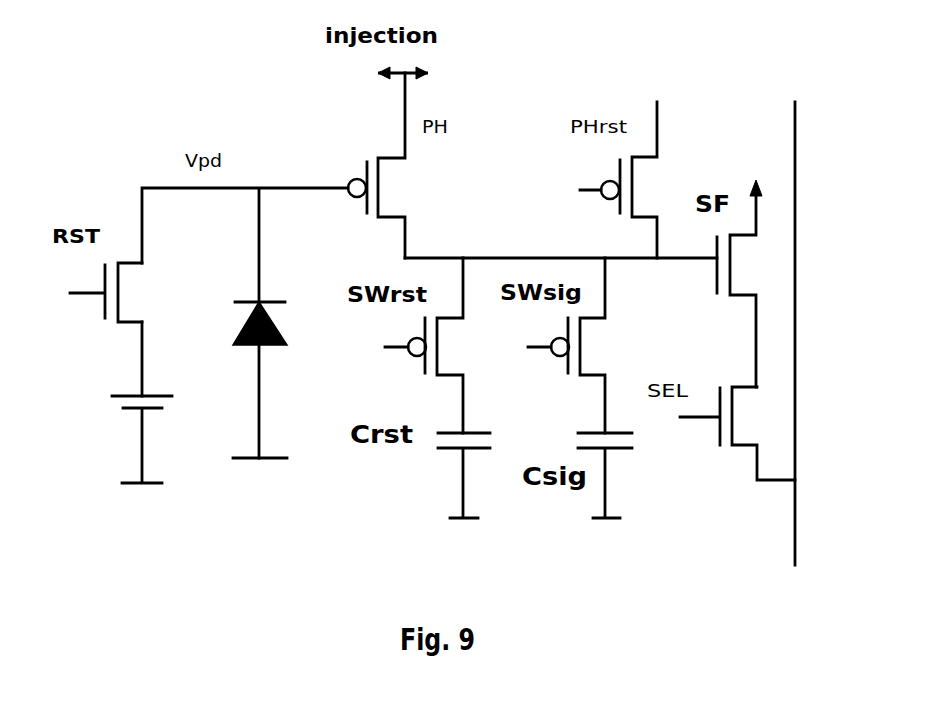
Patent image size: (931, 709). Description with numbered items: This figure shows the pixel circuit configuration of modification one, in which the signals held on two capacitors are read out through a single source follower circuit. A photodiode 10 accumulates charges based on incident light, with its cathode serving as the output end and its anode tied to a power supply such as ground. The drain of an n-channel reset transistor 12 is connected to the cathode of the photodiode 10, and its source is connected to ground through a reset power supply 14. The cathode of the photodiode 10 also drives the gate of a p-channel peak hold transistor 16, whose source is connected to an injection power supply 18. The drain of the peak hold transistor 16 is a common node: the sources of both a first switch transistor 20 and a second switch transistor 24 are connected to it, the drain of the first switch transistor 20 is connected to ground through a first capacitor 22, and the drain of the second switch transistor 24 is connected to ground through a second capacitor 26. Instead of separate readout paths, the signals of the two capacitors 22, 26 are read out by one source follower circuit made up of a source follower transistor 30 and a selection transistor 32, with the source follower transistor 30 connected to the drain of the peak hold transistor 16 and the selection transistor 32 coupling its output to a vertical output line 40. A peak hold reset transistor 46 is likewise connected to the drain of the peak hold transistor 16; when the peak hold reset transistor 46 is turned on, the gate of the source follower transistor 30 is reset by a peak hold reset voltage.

The photodiode 10 is at (240, 315).
The reset transistor 12 is at (92, 315).
The reset power supply 14 is at (105, 400).
The peak hold transistor 16 is at (353, 162).
The injection power supply 18 is at (435, 71).
The first switch transistor 20 is at (405, 355).
The first capacitor 22 is at (442, 457).
The second switch transistor 24 is at (595, 343).
The second capacitor 26 is at (637, 452).
The source follower transistor 30 is at (757, 260).
The selection transistor 32 is at (748, 415).
The output signal line 40 is at (795, 230).
The peak hold reset transistor 46 is at (650, 180).